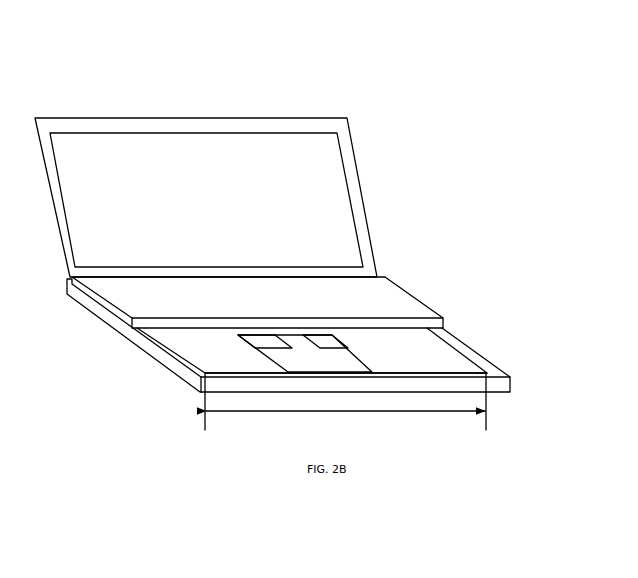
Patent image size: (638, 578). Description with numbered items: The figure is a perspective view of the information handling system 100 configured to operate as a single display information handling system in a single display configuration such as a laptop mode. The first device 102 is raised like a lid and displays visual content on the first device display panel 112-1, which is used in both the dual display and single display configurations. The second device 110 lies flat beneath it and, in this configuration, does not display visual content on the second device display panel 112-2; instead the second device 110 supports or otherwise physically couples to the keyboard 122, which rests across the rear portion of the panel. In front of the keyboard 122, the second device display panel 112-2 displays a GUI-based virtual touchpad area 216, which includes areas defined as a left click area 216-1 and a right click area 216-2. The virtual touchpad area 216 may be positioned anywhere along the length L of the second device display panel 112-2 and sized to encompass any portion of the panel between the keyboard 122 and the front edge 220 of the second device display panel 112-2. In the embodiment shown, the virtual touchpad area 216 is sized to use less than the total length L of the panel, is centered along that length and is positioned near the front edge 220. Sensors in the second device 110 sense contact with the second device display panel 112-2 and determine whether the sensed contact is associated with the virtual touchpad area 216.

The information handling system 100 is at (254, 79).
The first device 102 is at (352, 133).
The first device display panel 112-1 is at (352, 205).
The keyboard 122 is at (412, 293).
The second device 110 is at (458, 332).
The second device display panel 112-2 is at (467, 357).
The front edge 220 is at (441, 374).
The virtual touchpad area 216 is at (237, 353).
The left click area 216-1 is at (261, 336).
The right click area 216-2 is at (319, 336).
The length L is at (419, 414).